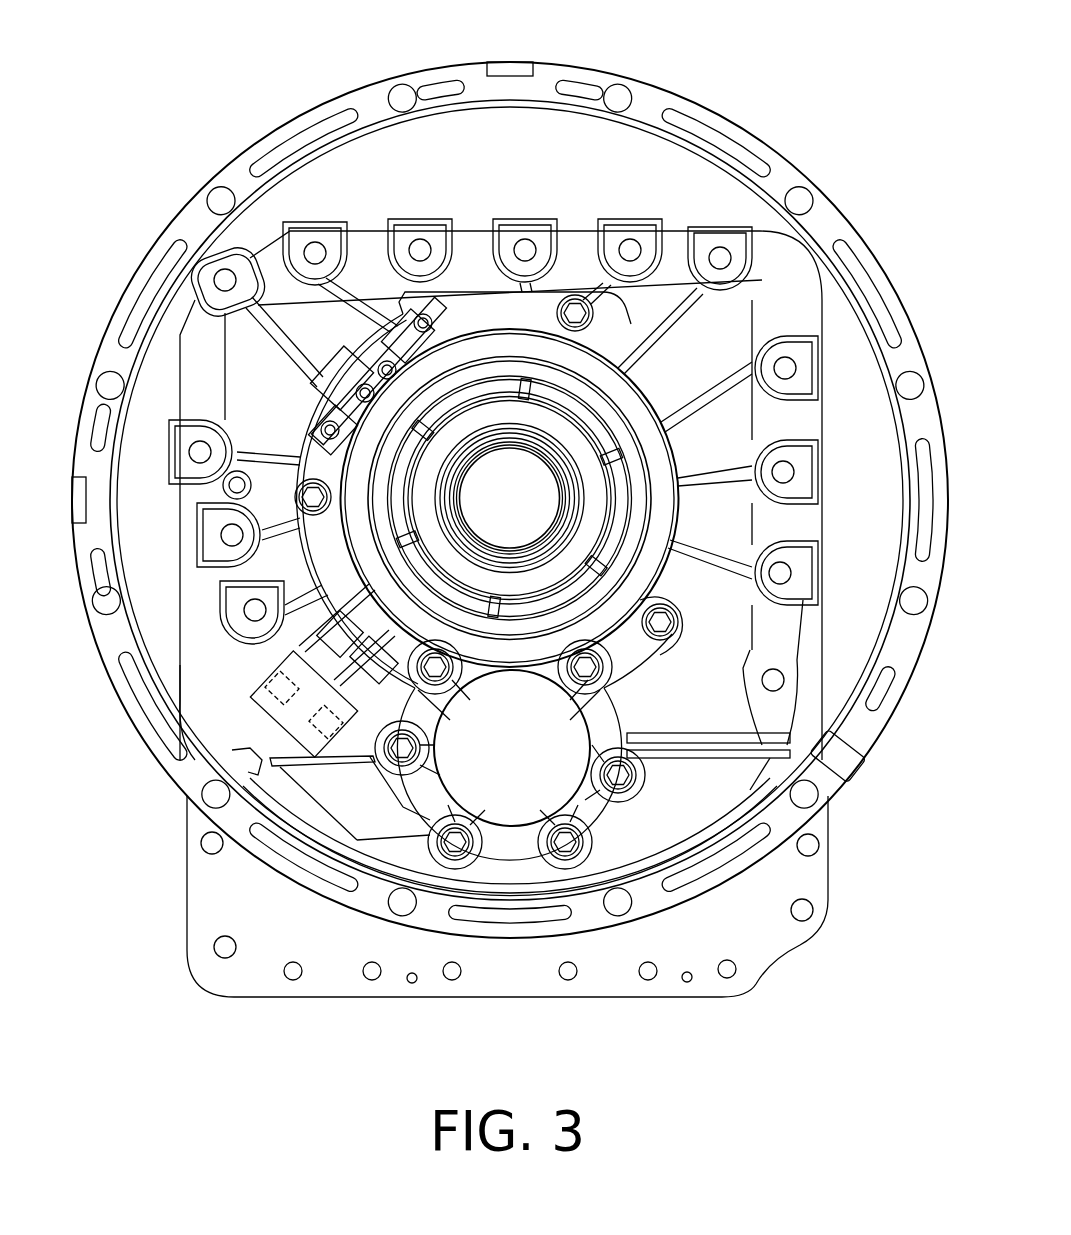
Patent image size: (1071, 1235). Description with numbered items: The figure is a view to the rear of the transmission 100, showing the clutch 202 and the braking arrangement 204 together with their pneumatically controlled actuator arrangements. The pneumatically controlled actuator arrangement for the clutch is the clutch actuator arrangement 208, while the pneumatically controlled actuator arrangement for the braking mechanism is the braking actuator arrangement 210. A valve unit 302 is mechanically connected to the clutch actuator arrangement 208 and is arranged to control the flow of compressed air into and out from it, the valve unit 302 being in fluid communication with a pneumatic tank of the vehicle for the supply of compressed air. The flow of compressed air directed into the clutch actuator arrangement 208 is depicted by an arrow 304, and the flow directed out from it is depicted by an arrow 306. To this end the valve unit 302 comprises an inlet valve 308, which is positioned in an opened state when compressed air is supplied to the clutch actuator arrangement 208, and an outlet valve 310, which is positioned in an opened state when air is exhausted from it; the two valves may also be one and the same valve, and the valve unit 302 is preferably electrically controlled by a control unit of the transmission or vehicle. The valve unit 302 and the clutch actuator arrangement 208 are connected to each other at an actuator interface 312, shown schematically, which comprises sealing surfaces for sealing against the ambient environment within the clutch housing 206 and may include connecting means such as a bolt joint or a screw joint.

The transmission 100 is at (200, 80).
The clutch 202 is at (358, 484).
The braking arrangement 204 is at (508, 762).
The clutch housing 206 is at (195, 232).
The clutch actuator arrangement 208 is at (428, 482).
The braking actuator arrangement 210 is at (513, 845).
The valve unit 302 is at (228, 752).
The arrow depicting flow of compressed air into the clutch actuator arrangement 304 is at (292, 654).
The arrow depicting flow of compressed air out from the clutch actuator arrangement 306 is at (360, 756).
The inlet valve 308 is at (258, 700).
The outlet valve 310 is at (350, 740).
The actuator interface 312 is at (330, 622).